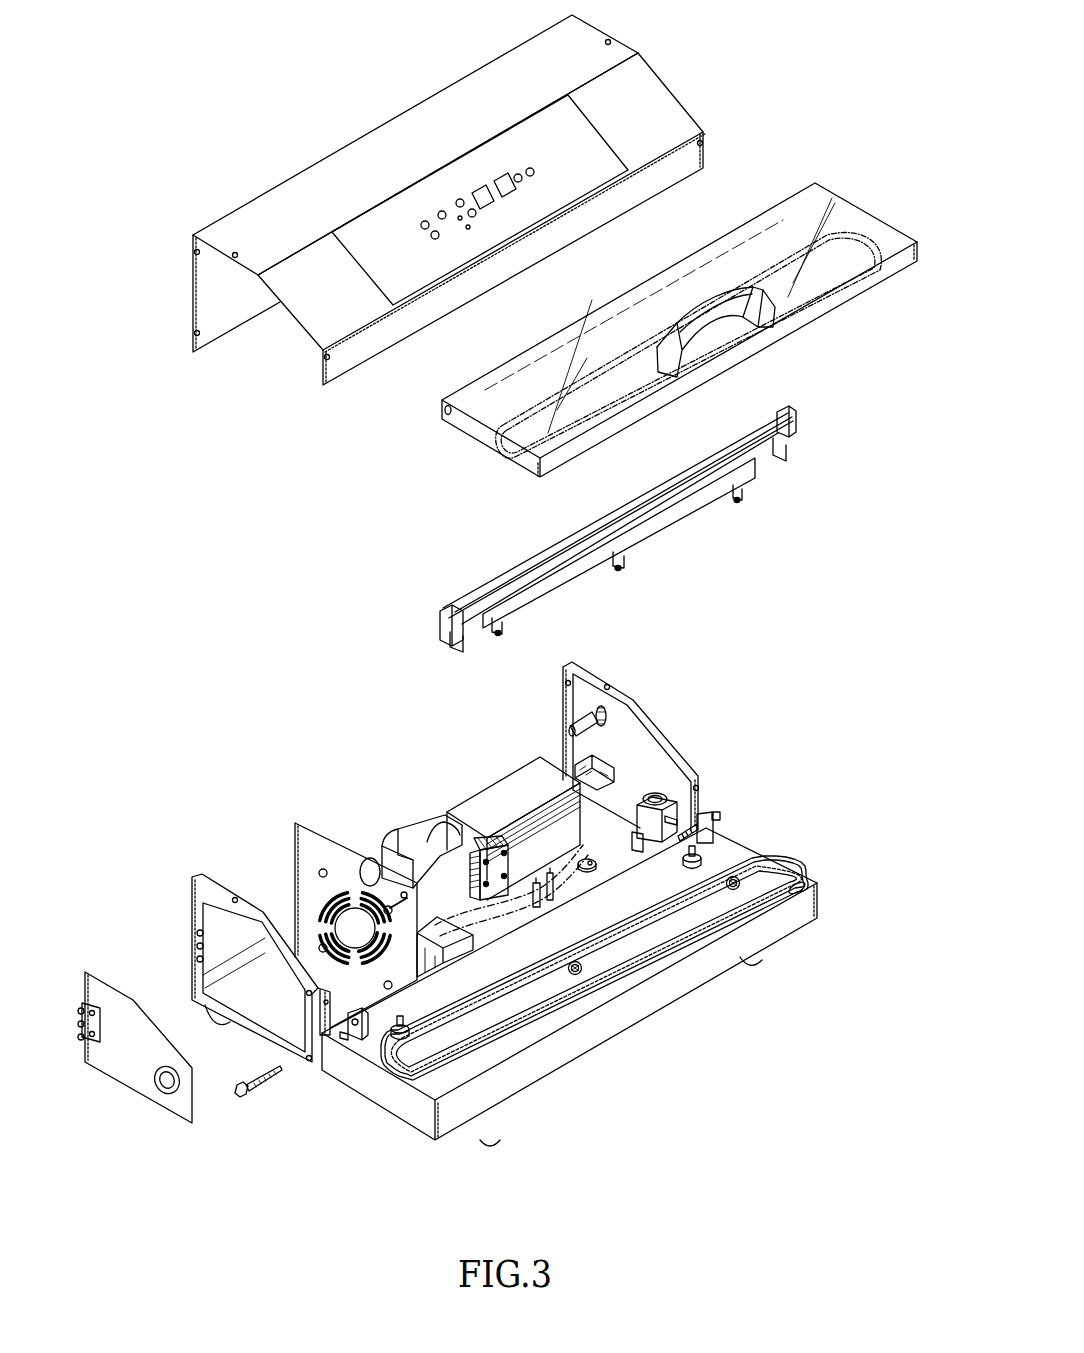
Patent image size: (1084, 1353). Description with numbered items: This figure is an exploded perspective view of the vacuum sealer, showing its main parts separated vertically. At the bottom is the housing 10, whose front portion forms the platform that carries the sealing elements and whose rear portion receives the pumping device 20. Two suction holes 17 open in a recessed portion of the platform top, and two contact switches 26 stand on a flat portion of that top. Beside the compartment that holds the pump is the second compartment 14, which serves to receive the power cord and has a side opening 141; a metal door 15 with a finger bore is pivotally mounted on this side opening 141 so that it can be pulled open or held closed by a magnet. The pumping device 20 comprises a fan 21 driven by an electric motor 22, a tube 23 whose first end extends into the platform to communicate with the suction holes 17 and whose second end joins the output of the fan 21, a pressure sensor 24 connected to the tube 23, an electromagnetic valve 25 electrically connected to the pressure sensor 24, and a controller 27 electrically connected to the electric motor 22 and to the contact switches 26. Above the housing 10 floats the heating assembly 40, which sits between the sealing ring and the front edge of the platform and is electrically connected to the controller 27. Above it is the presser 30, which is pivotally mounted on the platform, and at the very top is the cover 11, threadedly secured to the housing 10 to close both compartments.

The housing 10 is at (322, 1102).
The cover 11 is at (337, 182).
The second compartment 14 is at (323, 948).
The side opening 141 is at (215, 922).
The metal door 15 is at (125, 1027).
The suction holes 17 is at (582, 966).
The pumping device 20 is at (467, 845).
The fan 21 is at (382, 877).
The electric motor 22 is at (510, 790).
The tube 23 is at (490, 850).
The pressure sensor 24 is at (583, 861).
The electromagnetic valve 25 is at (668, 800).
The contact switches 26 is at (702, 855).
The controller 27 is at (455, 940).
The presser 30 is at (800, 205).
The heating assembly 40 is at (492, 557).